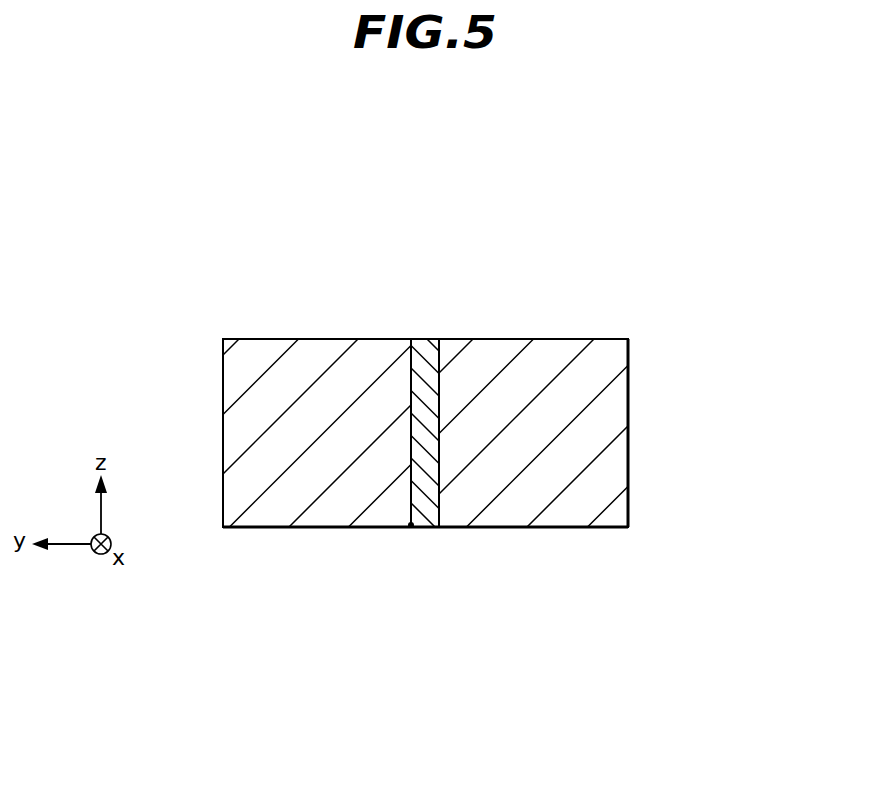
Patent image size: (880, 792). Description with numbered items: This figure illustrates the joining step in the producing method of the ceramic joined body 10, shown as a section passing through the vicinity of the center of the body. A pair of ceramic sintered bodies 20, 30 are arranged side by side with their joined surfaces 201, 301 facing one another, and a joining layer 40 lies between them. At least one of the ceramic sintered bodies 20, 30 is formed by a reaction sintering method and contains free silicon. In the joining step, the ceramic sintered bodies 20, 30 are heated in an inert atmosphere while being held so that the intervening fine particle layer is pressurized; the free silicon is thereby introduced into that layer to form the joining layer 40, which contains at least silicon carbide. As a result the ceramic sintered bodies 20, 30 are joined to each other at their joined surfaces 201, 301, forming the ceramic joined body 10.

The ceramic joined body 10 is at (697, 265).
The ceramic sintered body 20 is at (288, 362).
The joined surface 201 is at (417, 354).
The joining layer 40 is at (427, 347).
The ceramic sintered body 30 is at (542, 356).
The joined surface 301 is at (439, 493).